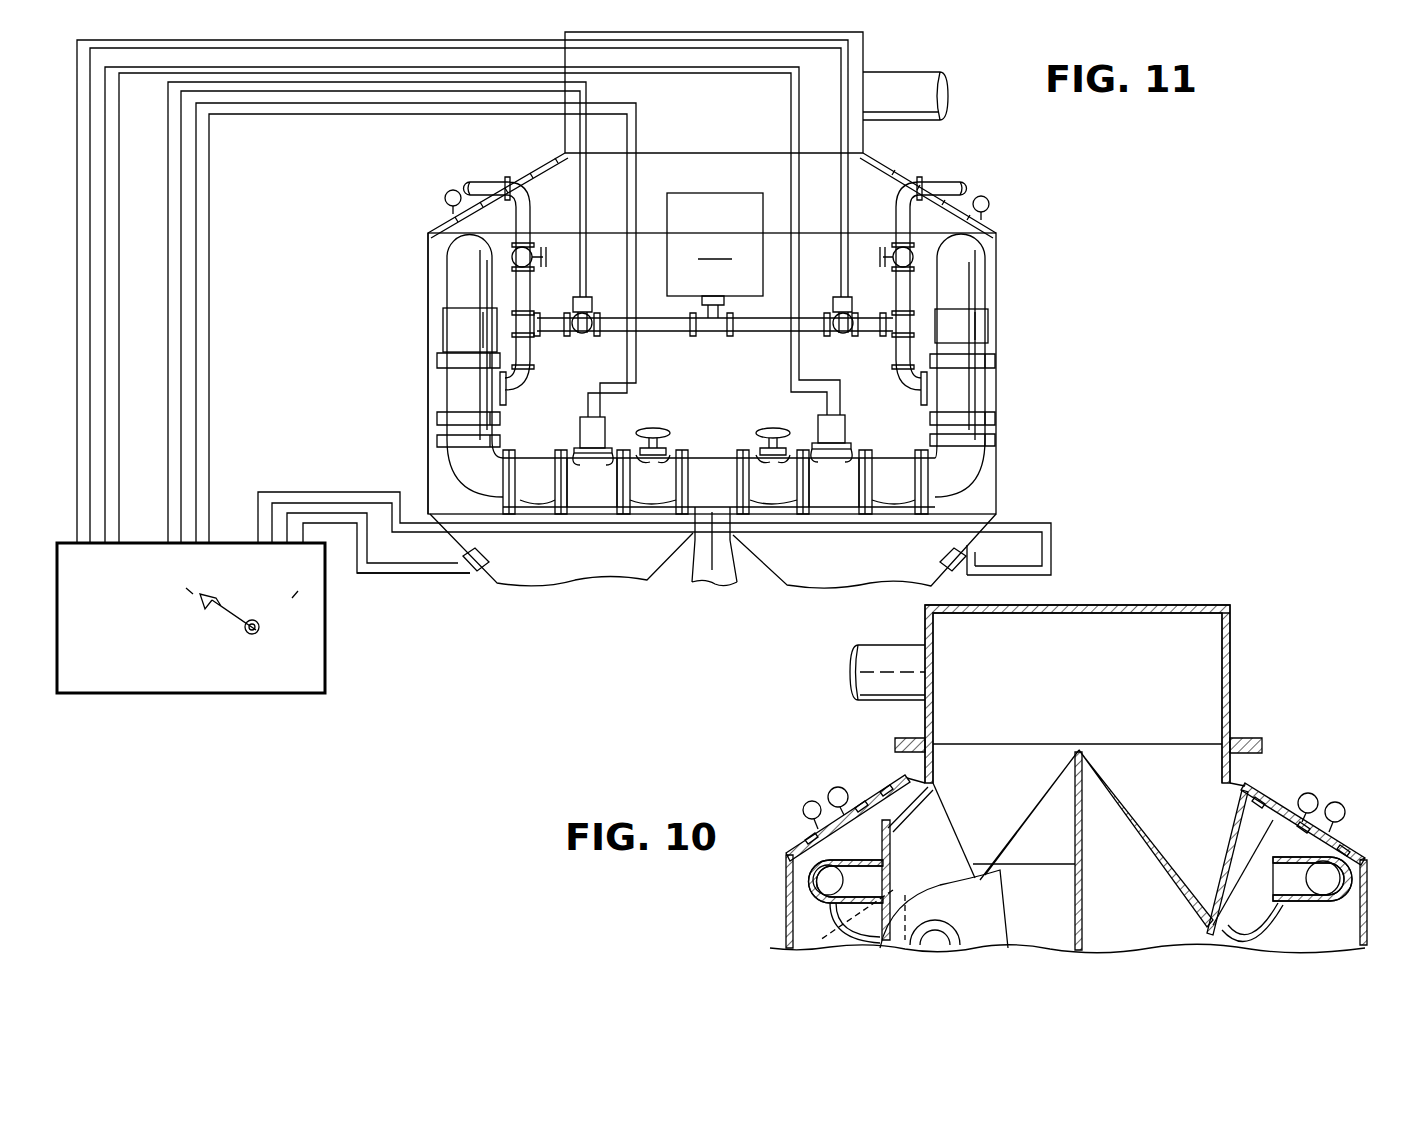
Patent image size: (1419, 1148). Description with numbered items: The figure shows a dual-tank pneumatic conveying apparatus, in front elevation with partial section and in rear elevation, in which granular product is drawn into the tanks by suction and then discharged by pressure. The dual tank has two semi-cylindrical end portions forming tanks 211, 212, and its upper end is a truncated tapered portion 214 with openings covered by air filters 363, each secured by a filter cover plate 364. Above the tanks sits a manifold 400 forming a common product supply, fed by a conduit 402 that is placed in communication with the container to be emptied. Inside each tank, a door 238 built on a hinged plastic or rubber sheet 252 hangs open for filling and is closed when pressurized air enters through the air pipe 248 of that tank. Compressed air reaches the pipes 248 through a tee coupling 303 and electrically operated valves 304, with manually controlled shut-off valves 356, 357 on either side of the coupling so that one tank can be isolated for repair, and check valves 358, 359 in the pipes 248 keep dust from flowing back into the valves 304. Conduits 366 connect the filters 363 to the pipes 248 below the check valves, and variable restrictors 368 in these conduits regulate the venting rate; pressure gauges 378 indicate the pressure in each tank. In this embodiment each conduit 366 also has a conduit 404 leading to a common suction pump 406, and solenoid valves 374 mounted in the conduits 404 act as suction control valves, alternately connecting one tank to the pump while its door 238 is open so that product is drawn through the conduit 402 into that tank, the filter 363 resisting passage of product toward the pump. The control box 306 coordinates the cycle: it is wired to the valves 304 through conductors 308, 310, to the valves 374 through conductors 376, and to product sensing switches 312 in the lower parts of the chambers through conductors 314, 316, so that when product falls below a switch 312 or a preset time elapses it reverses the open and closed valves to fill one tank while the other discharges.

In FIG. 11, the semi-cylindrical end portion 211 is at (997, 240).
In FIG. 10, the semi-cylindrical end portion 211 is at (786, 906).
In FIG. 11, the semi-cylindrical end portion 212 is at (427, 296).
In FIG. 10, the semi-cylindrical end portion 212 is at (1368, 925).
In FIG. 10, the truncated tapered portion 214 is at (1366, 860).
In FIG. 10, the valve closure member 238 is at (795, 936).
In FIG. 11, the pipe 248 is at (455, 263).
In FIG. 10, the sheet 252 is at (900, 880).
In FIG. 11, the tee coupling 303 is at (715, 470).
In FIG. 11, the valve 304 is at (598, 500).
In FIG. 11, the control box 306 is at (326, 663).
In FIG. 11, the conductor 308 is at (590, 410).
In FIG. 11, the conductor 310 is at (790, 373).
In FIG. 11, the switch 312 is at (470, 571).
In FIG. 11, the conductor 314 is at (1050, 552).
In FIG. 11, the conductor 316 is at (440, 575).
In FIG. 11, the manually controlled shut-off valve 356 is at (672, 418).
In FIG. 11, the manually controlled shut-off valve 357 is at (768, 430).
In FIG. 11, the check valve 358 is at (992, 331).
In FIG. 11, the check valve 359 is at (455, 332).
In FIG. 11, the air filter 363 is at (432, 226).
In FIG. 10, the air filter 363 is at (790, 840).
In FIG. 10, the filter cover plate 364 is at (880, 785).
In FIG. 11, the conduit 366 is at (485, 178).
In FIG. 10, the conduit 366 is at (835, 788).
In FIG. 11, the variable restrictor 368 is at (543, 253).
In FIG. 11, the solenoid valve 374 is at (585, 333).
In FIG. 11, the conductor 376 is at (583, 252).
In FIG. 11, the pressure gauge 378 is at (445, 196).
In FIG. 11, the manifold 400 is at (866, 58).
In FIG. 10, the manifold 400 is at (1230, 692).
In FIG. 11, the conduit 402 is at (935, 105).
In FIG. 10, the conduit 402 is at (858, 668).
In FIG. 11, the conduit 404 is at (685, 335).
In FIG. 11, the suction pump 406 is at (715, 255).